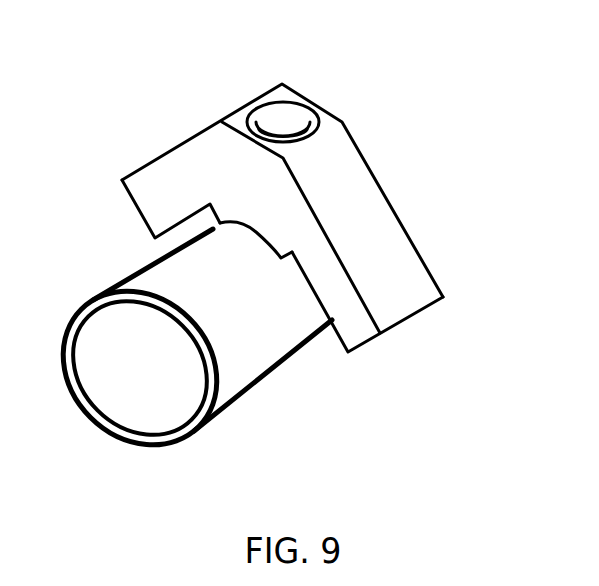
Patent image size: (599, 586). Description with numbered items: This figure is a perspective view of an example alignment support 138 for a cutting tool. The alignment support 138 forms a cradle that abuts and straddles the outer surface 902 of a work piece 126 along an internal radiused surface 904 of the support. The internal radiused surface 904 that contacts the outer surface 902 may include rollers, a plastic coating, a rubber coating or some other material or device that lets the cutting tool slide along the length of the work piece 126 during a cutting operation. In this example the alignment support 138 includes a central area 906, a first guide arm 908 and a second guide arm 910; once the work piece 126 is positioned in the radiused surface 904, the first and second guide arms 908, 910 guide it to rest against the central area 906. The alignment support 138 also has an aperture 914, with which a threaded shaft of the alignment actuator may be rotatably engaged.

The work piece 126 is at (122, 241).
The alignment support 138 is at (357, 65).
The outer surface 902 is at (240, 350).
The internal radiused surface 904 is at (252, 260).
The central area 906 is at (252, 200).
The first guide arm 908 is at (153, 185).
The second guide arm 910 is at (352, 327).
The aperture 914 is at (283, 121).